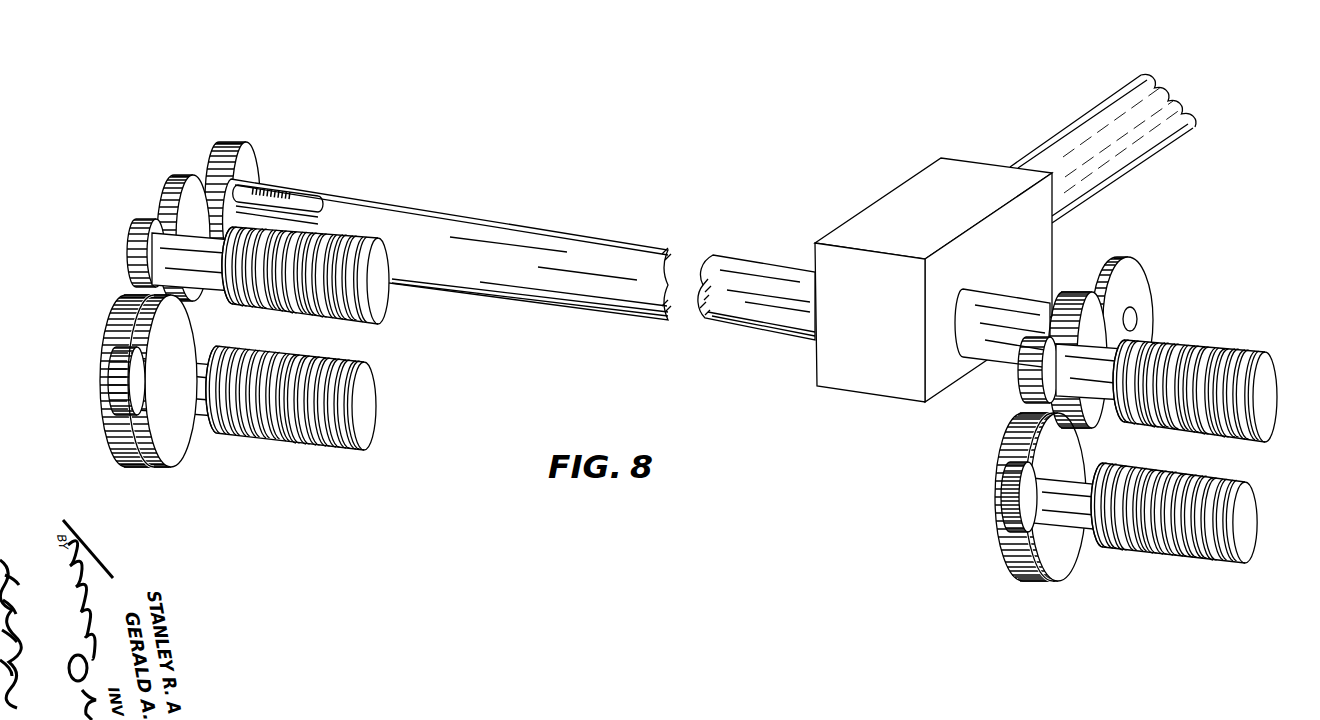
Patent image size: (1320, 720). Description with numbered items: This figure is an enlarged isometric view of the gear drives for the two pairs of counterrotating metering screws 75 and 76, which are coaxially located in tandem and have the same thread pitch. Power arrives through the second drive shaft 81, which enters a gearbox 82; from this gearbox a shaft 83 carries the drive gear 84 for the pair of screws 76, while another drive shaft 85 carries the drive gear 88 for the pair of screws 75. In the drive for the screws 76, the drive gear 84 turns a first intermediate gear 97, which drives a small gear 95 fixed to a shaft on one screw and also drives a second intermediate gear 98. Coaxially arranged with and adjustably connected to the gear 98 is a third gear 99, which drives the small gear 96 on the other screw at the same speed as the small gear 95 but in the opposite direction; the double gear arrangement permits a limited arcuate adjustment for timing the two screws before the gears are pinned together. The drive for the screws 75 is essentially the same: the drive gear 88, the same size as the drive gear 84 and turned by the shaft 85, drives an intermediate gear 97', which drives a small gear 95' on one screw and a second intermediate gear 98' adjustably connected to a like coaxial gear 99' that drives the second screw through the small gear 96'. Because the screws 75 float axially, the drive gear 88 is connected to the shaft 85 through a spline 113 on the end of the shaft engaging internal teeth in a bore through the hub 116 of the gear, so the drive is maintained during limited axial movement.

The driving screws 75 is at (360, 372).
The driving screws 76 is at (1268, 418).
The second drive shaft 81 is at (1140, 165).
The gearbox 82 is at (883, 307).
The shaft 83 is at (997, 362).
The drive gear 84 is at (1147, 270).
The drive shaft 85 is at (747, 322).
The drive gear 88 is at (240, 145).
The small gear 95 is at (1018, 392).
The small gear 95′ is at (130, 235).
The small gear 96 is at (992, 497).
The small gear 96′ is at (107, 390).
The first intermediate gear 97 is at (1072, 292).
The intermediate gear 97′ is at (190, 176).
The second intermediate gear 98 is at (995, 537).
The second intermediate gear 98′ is at (113, 314).
The third gear 99 is at (1060, 560).
The coaxial gear 99′ is at (167, 450).
The spline 113 is at (320, 198).
The hub 116 is at (273, 182).